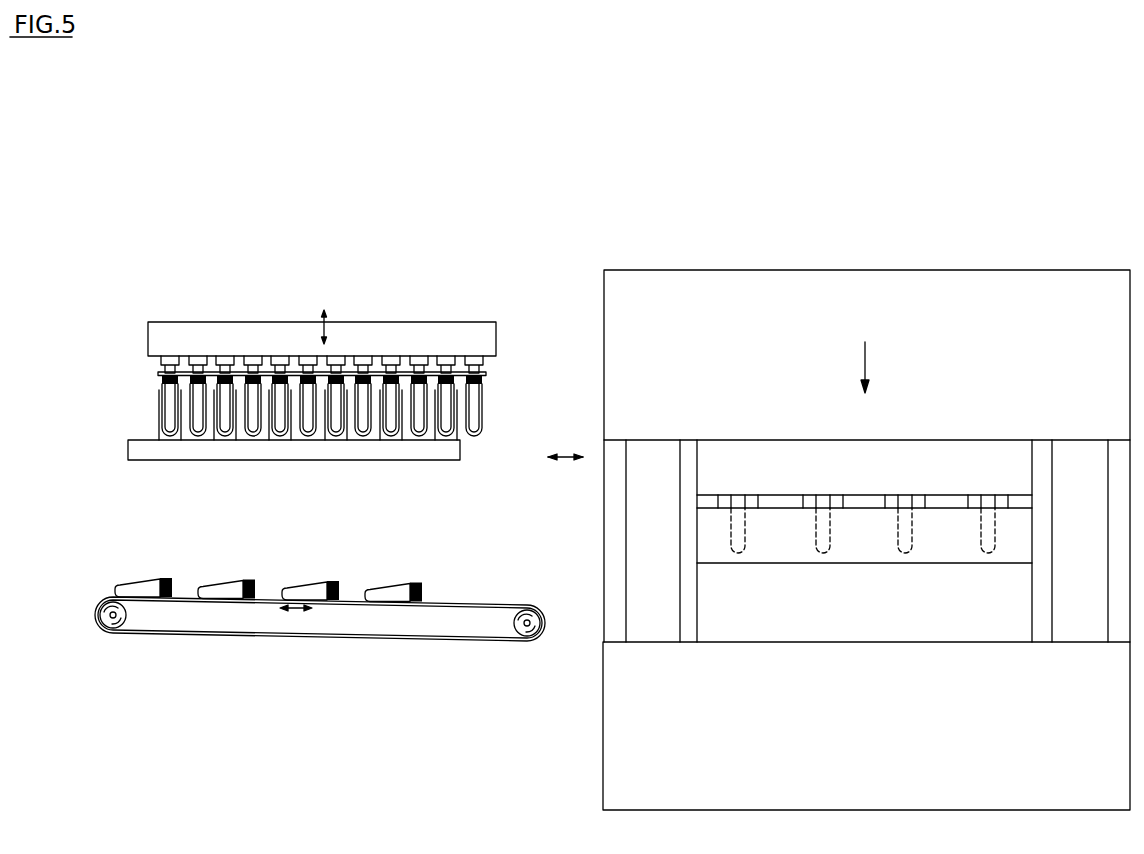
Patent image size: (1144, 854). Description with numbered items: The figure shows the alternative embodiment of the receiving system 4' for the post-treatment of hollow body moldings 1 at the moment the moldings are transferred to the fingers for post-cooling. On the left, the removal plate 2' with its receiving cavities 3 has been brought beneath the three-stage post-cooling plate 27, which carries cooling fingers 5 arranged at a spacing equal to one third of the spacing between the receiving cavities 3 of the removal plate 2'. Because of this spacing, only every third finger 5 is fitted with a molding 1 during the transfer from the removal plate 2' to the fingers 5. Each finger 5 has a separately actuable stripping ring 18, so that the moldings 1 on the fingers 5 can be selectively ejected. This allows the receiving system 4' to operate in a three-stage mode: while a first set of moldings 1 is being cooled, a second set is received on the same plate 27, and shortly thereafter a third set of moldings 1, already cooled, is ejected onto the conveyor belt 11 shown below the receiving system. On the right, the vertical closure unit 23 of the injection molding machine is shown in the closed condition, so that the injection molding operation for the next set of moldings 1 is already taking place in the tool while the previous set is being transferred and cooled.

The molding 1 is at (372, 592).
The removal plate 2' is at (265, 462).
The receiving cavities 3 is at (160, 430).
The receiving system 4' is at (319, 333).
The cooling fingers 5 is at (197, 412).
The conveyor belt 11 is at (137, 645).
The stripping ring 18 is at (486, 375).
The closure unit 23 is at (826, 325).
The post-cooling plate 27 is at (435, 345).